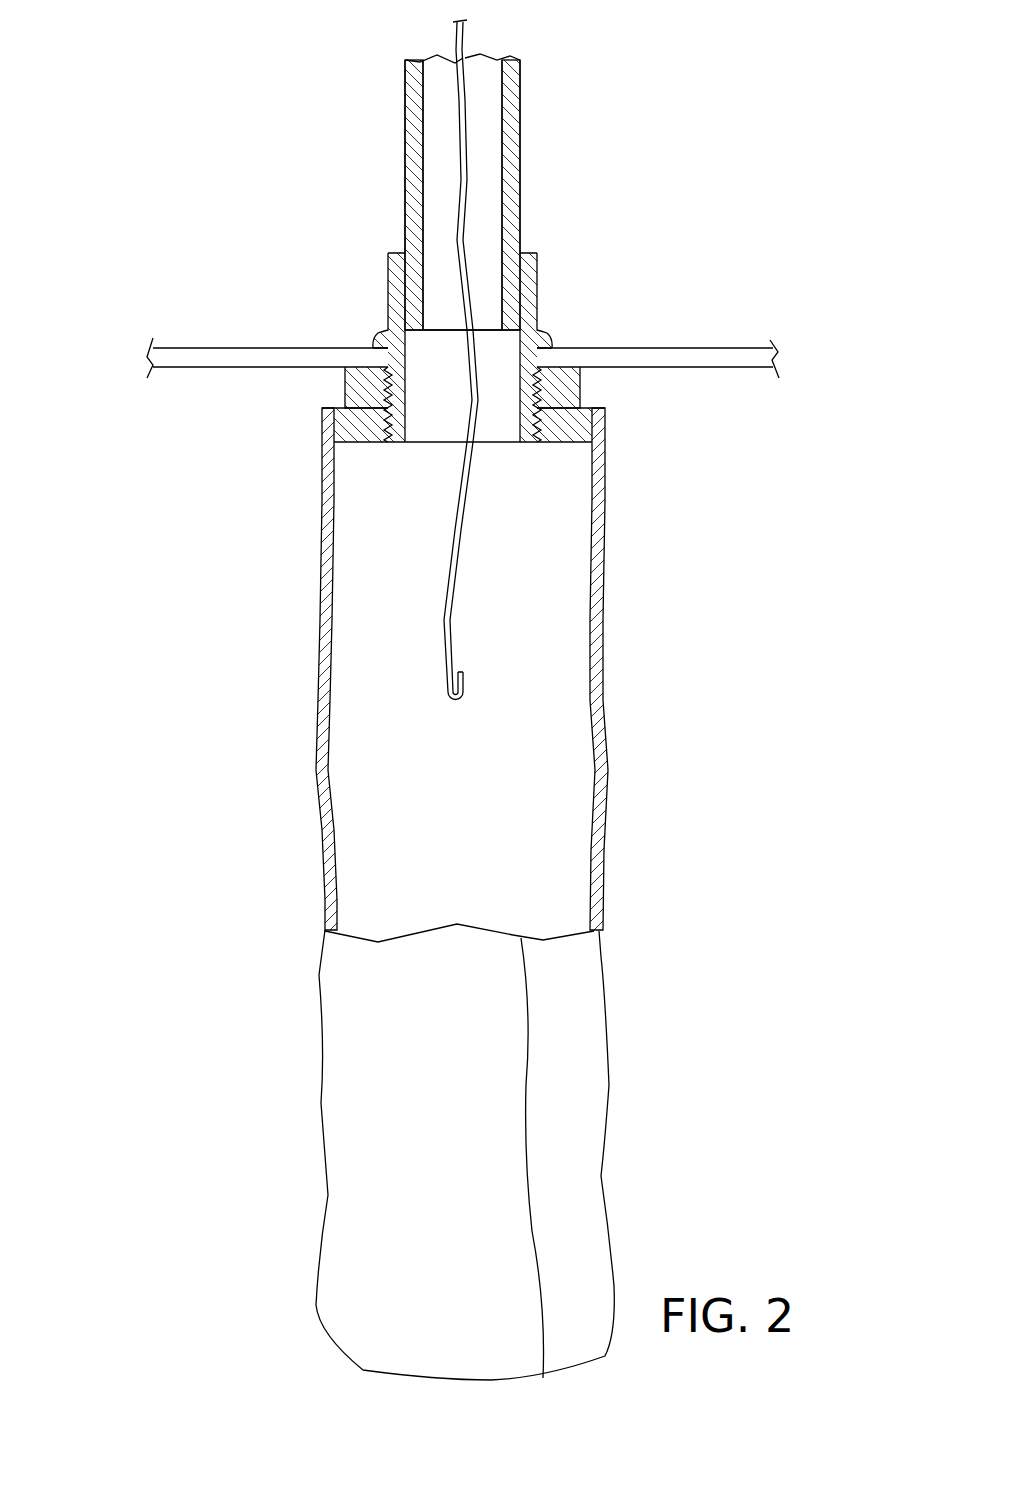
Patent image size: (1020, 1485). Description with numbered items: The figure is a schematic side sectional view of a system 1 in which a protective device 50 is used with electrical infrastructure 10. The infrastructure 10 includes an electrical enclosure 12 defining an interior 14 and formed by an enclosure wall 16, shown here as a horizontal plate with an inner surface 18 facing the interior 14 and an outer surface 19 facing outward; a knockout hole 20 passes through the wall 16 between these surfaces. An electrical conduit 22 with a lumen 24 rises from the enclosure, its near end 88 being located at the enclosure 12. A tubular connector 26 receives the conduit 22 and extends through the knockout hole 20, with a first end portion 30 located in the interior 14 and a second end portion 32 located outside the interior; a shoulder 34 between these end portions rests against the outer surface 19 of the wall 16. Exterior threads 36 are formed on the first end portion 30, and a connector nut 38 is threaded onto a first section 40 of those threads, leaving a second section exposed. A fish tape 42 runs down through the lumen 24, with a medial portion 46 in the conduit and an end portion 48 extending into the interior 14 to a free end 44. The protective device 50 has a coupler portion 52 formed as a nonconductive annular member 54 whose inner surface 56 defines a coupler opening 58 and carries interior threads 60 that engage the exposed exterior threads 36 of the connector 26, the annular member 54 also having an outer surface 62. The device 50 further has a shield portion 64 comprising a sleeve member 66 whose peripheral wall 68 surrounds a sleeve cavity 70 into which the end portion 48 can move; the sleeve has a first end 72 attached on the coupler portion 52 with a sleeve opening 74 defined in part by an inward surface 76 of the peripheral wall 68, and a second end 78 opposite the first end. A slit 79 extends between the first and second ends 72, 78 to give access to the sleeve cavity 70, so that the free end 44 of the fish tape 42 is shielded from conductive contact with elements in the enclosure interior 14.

The system 1 is at (226, 203).
The electrical infrastructure 10 is at (283, 150).
The electrical enclosure 12 is at (210, 338).
The interior 14 is at (195, 418).
The enclosure wall 16 is at (165, 345).
The inner surface 18 is at (242, 367).
The outer surface 19 is at (278, 343).
The knockout hole 20 is at (553, 357).
The electrical conduit 22 is at (408, 107).
The lumen 24 is at (483, 116).
The connector 26 is at (373, 288).
The first end portion 30 is at (388, 262).
The second end portion 32 is at (517, 445).
The shoulder 34 is at (371, 340).
The exterior threads 36 is at (547, 383).
The connector nut 38 is at (383, 398).
The first section 40 is at (385, 378).
The fish tape 42 is at (463, 47).
The free end 44 is at (466, 680).
The medial portion 46 is at (458, 178).
The end portion 48 is at (455, 542).
The protective device 50 is at (443, 894).
The coupler portion 52 is at (393, 669).
The annular member 54 is at (333, 427).
The inner surface 56 is at (385, 420).
The coupler opening 58 is at (538, 430).
The interior threads 60 is at (405, 422).
The outer surface 62 is at (332, 427).
The shield portion 64 is at (460, 1155).
The sleeve member 66 is at (603, 1028).
The peripheral wall 68 is at (323, 835).
The sleeve cavity 70 is at (363, 742).
The first end 72 is at (615, 433).
The sleeve opening 74 is at (592, 428).
The inward surface 76 is at (335, 698).
The second end 78 is at (300, 1316).
The slit 79 is at (526, 1170).
The near end 88 is at (483, 328).